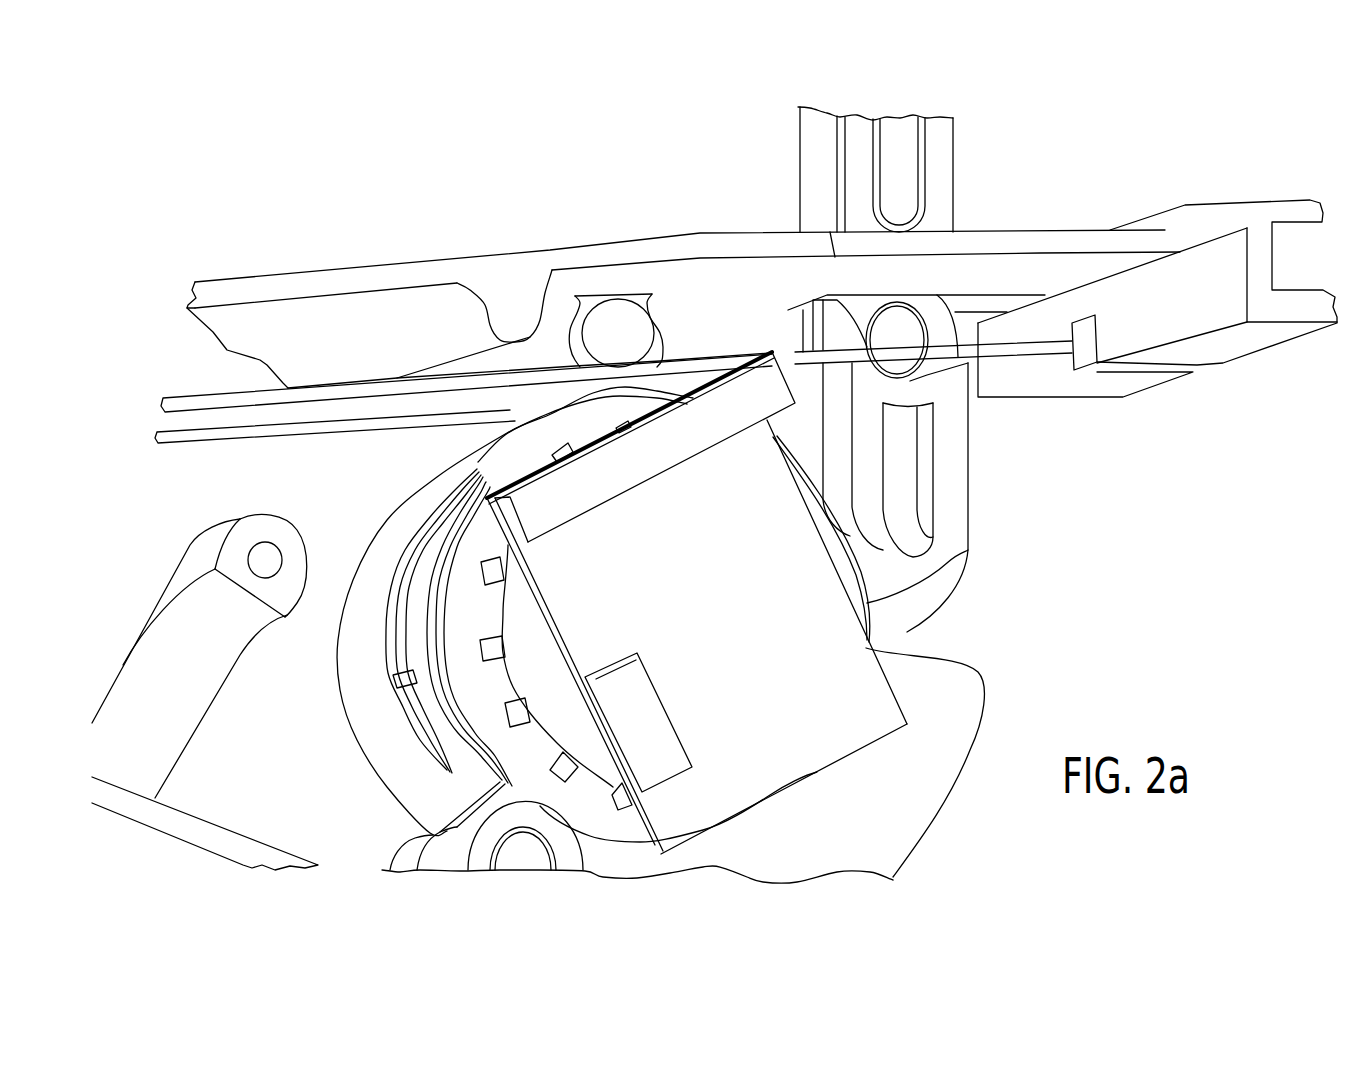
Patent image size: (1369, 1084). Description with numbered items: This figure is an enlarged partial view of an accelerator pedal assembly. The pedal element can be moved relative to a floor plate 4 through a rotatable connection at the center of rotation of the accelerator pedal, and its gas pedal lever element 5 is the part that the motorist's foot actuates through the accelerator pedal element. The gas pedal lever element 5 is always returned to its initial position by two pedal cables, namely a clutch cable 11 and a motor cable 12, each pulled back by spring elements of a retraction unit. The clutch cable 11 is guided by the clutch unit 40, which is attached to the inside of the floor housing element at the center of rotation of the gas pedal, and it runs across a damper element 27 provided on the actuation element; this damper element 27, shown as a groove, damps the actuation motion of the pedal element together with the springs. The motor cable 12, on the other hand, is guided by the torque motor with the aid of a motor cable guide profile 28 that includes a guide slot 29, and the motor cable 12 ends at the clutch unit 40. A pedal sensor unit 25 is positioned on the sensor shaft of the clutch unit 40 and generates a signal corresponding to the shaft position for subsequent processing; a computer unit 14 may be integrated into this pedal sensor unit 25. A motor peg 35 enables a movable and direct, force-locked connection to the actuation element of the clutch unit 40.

The floor plate 4 is at (1010, 242).
The gas pedal lever element 5 is at (813, 152).
The clutch cable 11 is at (205, 437).
The motor cable 12 is at (218, 400).
The computer unit 14 is at (767, 603).
The pedal sensor unit 25 is at (833, 588).
The damper element 27 is at (418, 520).
The motor cable guide profile 28 is at (1178, 287).
The guide slot 29 is at (1197, 365).
The motor peg 35 is at (912, 374).
The clutch unit 40 is at (527, 668).